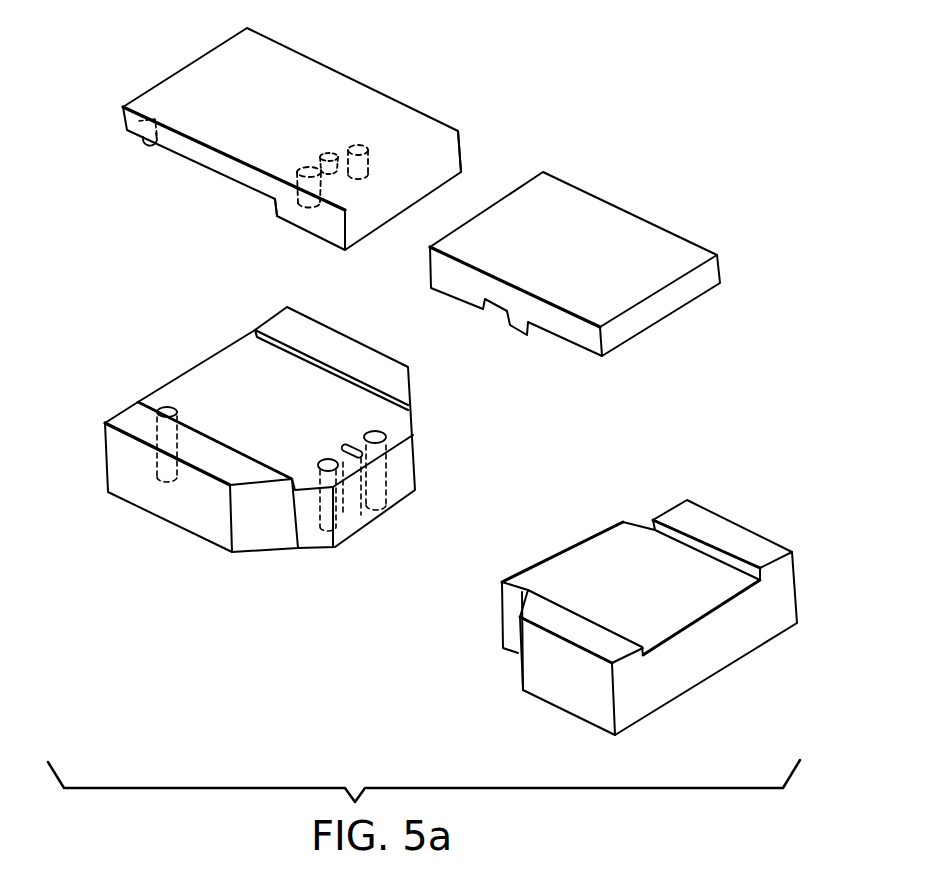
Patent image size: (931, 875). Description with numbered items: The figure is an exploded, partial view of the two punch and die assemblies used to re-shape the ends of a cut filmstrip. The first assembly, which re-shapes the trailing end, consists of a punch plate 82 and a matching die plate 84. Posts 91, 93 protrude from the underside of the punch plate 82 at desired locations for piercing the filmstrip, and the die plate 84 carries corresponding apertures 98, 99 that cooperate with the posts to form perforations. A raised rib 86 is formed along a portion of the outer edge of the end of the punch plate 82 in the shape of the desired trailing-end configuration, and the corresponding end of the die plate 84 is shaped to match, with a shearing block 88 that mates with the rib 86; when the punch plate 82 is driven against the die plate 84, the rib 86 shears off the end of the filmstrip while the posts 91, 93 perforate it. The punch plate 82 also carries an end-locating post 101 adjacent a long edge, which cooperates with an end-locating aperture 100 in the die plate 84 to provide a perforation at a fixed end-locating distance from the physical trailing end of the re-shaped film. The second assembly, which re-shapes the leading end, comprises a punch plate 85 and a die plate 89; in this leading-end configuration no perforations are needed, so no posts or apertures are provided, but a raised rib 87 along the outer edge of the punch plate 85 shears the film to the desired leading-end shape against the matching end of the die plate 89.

The punch plate 82 is at (122, 71).
The die plate 84 is at (102, 375).
The punch plate 85 is at (712, 218).
The raised rib 86 is at (273, 206).
The raised rib 87 is at (491, 306).
The shearing block 88 is at (405, 464).
The die plate 89 is at (758, 505).
The post 91 is at (363, 140).
The post 93 is at (323, 147).
The aperture 98 is at (382, 430).
The aperture 99 is at (345, 447).
The end-locating aperture 100 is at (171, 409).
The end-locating post 101 is at (147, 147).